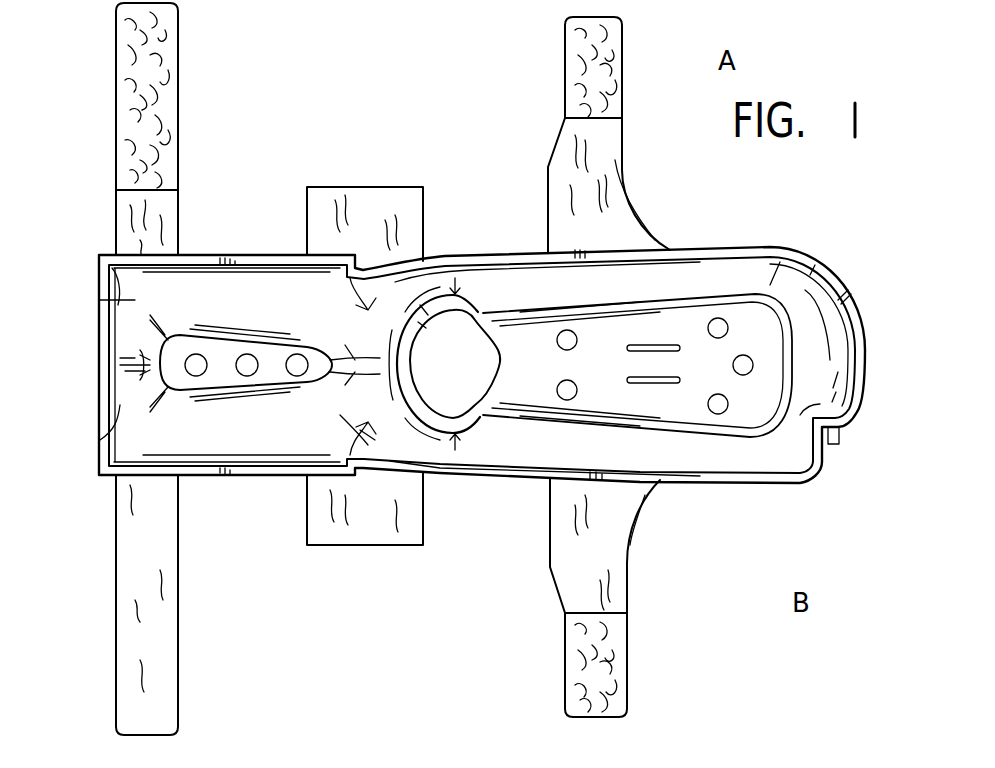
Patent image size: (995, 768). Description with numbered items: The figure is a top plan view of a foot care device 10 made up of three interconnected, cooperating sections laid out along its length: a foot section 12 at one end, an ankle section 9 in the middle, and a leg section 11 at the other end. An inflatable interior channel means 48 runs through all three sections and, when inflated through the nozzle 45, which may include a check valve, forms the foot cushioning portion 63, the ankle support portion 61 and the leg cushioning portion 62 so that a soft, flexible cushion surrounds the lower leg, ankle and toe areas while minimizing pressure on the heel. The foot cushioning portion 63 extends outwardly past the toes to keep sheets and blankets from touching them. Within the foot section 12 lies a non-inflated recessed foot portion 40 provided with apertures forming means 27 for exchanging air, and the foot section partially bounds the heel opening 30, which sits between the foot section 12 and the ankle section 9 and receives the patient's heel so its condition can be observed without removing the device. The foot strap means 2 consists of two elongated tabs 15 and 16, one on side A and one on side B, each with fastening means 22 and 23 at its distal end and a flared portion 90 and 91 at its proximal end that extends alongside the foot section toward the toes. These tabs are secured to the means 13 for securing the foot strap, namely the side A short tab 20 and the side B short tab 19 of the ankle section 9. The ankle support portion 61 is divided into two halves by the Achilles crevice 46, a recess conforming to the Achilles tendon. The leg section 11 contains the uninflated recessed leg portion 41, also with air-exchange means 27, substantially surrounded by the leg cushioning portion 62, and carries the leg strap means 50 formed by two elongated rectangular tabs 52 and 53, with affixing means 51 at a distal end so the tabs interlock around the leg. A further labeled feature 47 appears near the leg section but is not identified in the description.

The foot strap means 2 is at (548, 148).
The ankle section 9 is at (437, 240).
The foot care device 10 is at (390, 108).
The leg section 11 is at (212, 212).
The foot section 12 is at (745, 250).
The means for securing foot strap means 13 is at (331, 188).
The elongated tab 15 is at (622, 198).
The elongated tab 16 is at (628, 545).
The side B short tab 19 is at (410, 527).
The side A short tab 20 is at (376, 211).
The fastening means 22 is at (622, 50).
The fastening means 23 is at (621, 650).
The means for exchanging air 27 is at (247, 360).
The heel opening 30 is at (463, 387).
The recessed foot portion 40 is at (732, 462).
The recessed leg portion 41 is at (213, 385).
The nozzle 45 is at (834, 444).
The Achilles crevice 46 is at (343, 372).
The front slot 47 is at (130, 372).
The inflatable interior channel means 48 is at (812, 390).
The leg strap means 50 is at (109, 129).
The affixing means 51 is at (138, 70).
The elongated rectangular tab 52 is at (124, 209).
The elongated rectangular tab 53 is at (130, 567).
The ankle support portion 61 is at (350, 470).
The leg cushioning portion 62 is at (207, 291).
The foot cushioning portion 63 is at (793, 254).
The flared portion 90 is at (654, 232).
The flared portion 91 is at (645, 505).